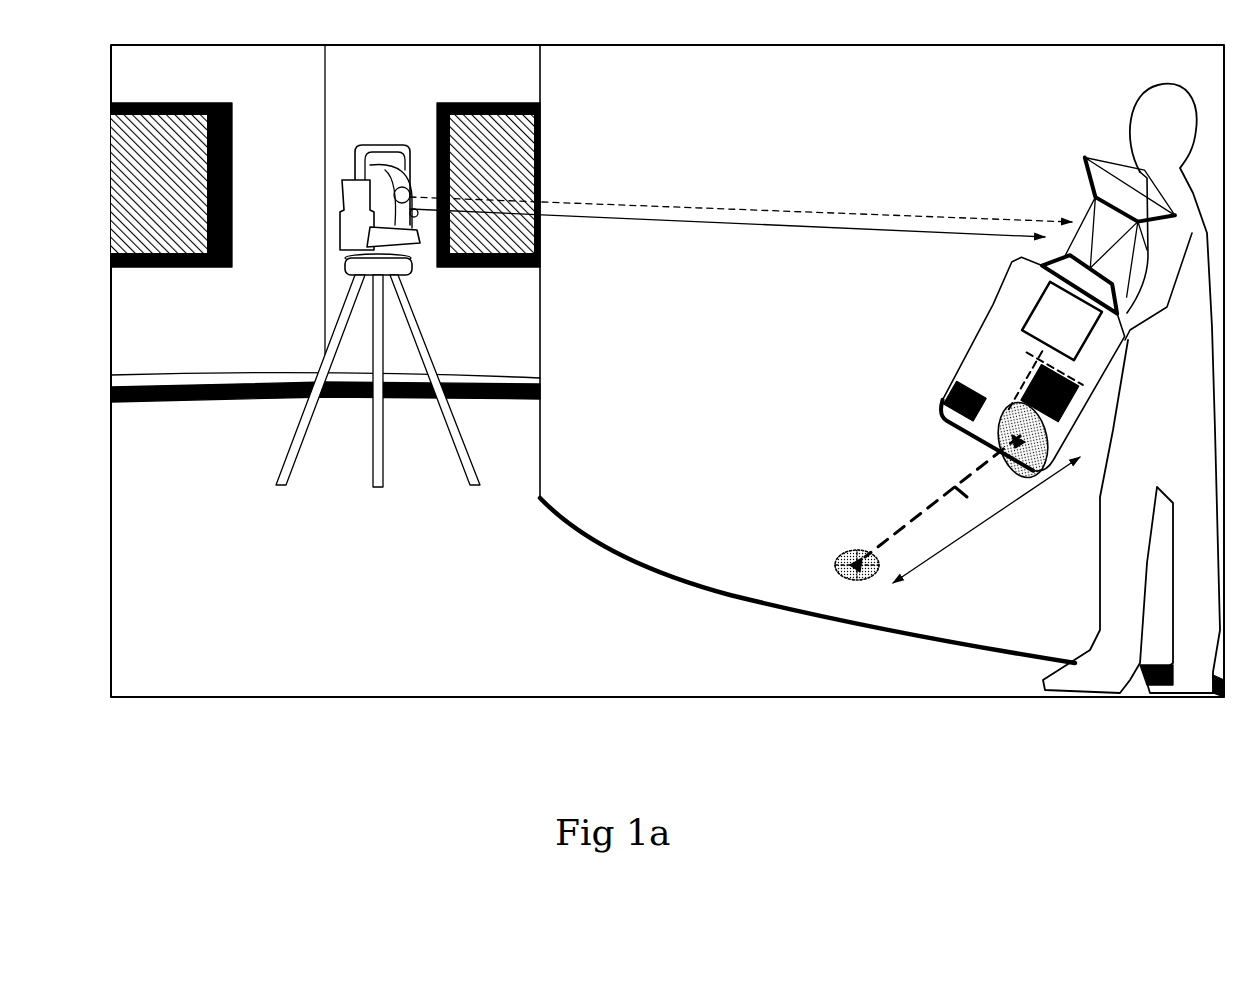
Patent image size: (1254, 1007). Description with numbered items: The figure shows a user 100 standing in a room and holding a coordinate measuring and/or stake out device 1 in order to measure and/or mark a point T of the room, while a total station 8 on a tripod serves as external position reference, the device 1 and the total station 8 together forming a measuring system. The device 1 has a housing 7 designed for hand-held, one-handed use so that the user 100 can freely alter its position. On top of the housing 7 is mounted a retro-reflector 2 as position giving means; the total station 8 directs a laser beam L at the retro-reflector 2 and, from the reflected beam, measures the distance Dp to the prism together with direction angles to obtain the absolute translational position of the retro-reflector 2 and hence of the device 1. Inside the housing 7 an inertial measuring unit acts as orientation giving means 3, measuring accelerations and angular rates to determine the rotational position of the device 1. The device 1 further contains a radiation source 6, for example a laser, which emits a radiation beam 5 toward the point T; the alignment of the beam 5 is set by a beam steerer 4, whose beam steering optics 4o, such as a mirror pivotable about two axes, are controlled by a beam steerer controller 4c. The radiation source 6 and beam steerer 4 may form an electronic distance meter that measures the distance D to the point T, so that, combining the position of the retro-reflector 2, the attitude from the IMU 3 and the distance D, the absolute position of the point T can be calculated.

The user 100 is at (1104, 384).
The coordinate measuring and/or stake out device 1 is at (1007, 308).
The retro-reflector 2 is at (1093, 209).
The orientation giving means 3 is at (1062, 321).
The beam steerer 4 is at (1000, 359).
The beam steerer controller 4c is at (970, 357).
The beam steering optics 4o is at (1023, 463).
The radiation beam 5 is at (941, 496).
The radiation source 6 is at (947, 432).
The housing 7 is at (990, 328).
The total station 8 is at (378, 290).
The laser beam L is at (741, 188).
The distance to prism Dp is at (727, 253).
The distance to the target point D is at (986, 535).
The point T is at (800, 557).